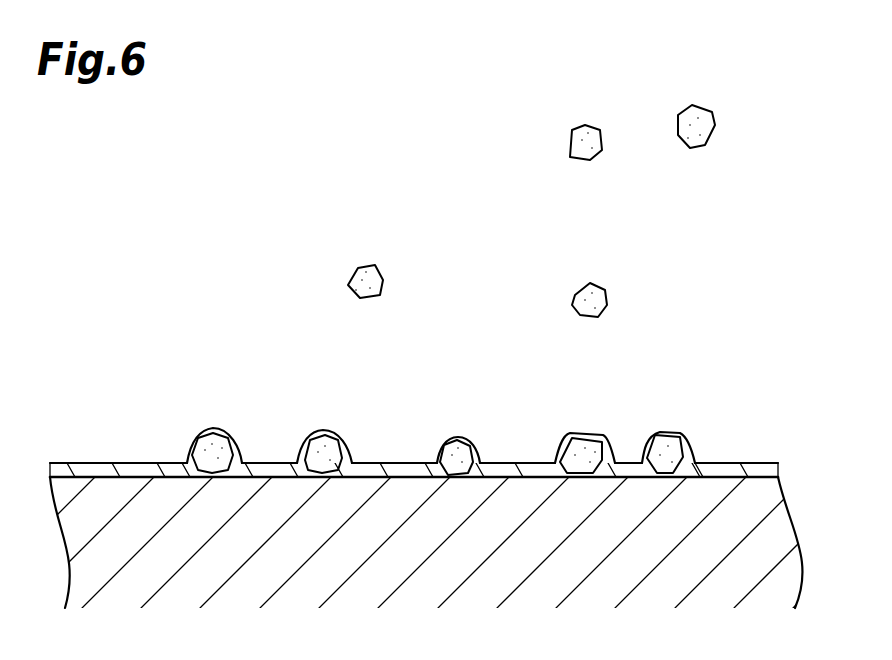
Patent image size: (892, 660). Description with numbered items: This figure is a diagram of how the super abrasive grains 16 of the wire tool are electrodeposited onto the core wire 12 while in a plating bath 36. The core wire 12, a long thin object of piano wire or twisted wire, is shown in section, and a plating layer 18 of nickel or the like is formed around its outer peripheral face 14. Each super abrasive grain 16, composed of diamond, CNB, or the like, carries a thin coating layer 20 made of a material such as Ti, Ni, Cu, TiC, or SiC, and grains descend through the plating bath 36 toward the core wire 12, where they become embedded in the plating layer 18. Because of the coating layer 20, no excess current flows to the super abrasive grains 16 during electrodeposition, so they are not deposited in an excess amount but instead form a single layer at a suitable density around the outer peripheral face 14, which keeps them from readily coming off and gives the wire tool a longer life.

The core wire 12 is at (767, 527).
The outer peripheral face 14 is at (773, 460).
The super abrasive grains 16 is at (377, 283).
The plating layer 18 is at (753, 470).
The coating layer 20 is at (378, 267).
The plating bath 36 is at (768, 255).